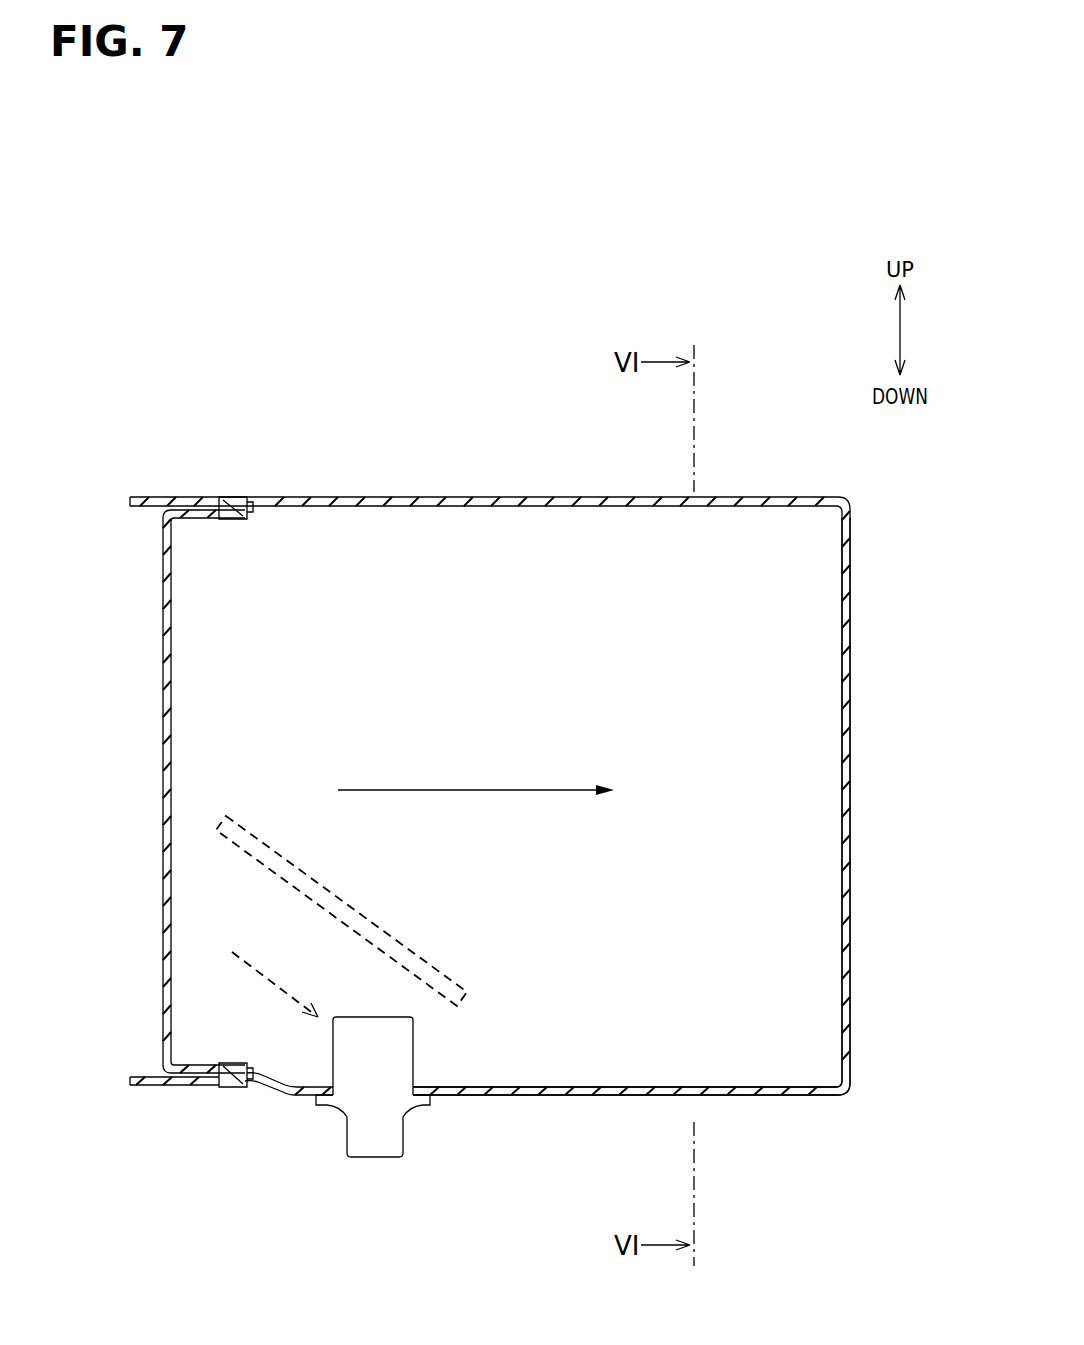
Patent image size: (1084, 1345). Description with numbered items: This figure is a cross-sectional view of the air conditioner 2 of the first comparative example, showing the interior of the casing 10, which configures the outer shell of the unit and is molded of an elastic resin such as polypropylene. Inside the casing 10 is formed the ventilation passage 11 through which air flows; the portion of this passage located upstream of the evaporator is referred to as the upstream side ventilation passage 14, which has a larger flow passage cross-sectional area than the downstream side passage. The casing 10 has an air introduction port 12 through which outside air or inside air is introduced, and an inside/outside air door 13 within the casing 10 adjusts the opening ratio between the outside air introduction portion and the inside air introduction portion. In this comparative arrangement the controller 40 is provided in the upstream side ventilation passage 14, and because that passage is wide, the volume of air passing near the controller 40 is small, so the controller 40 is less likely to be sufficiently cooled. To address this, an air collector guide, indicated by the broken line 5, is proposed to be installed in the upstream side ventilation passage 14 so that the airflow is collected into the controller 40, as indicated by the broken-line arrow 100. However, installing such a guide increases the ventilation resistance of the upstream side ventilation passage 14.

The air conditioner 2 is at (483, 298).
The broken line 5 is at (315, 905).
The casing 10 is at (503, 497).
The ventilation passage 11 is at (772, 617).
The air introduction port 12 is at (207, 512).
The inside/outside air door 13 is at (165, 749).
The upstream side ventilation passage 14 is at (631, 806).
The controller 40 is at (370, 1133).
The broken-line arrow 100 is at (272, 982).